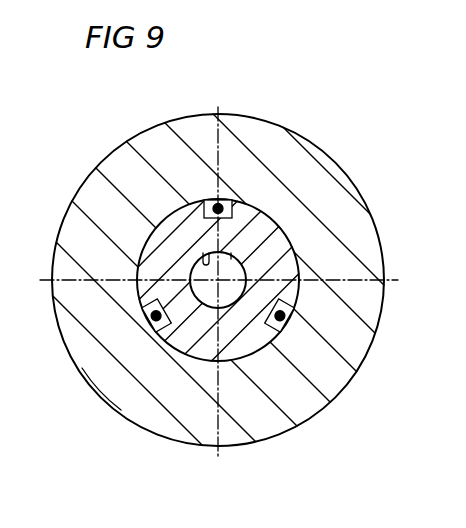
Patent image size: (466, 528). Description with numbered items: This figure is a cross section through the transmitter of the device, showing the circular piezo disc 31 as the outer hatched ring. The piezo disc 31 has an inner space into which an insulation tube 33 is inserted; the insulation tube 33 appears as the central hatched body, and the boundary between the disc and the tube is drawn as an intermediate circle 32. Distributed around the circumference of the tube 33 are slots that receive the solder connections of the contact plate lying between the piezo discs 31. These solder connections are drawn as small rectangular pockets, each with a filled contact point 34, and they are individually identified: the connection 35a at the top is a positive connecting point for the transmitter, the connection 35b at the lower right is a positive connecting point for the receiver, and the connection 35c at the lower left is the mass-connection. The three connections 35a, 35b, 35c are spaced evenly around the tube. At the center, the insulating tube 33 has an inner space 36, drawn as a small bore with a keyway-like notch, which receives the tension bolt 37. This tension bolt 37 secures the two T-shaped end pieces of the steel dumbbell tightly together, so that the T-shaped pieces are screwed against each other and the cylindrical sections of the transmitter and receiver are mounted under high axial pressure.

The piezo disc 31 is at (298, 398).
The intermediate ring 32 is at (251, 356).
The insulation tube 33 is at (185, 332).
The pin 34 is at (233, 210).
The positive connecting points for the transmitter 35a is at (240, 146).
The positive connecting points for the receiver 35b is at (285, 323).
The mass-connections 35c is at (157, 337).
The inner space 36 is at (203, 253).
The tension bolt 37 is at (262, 220).